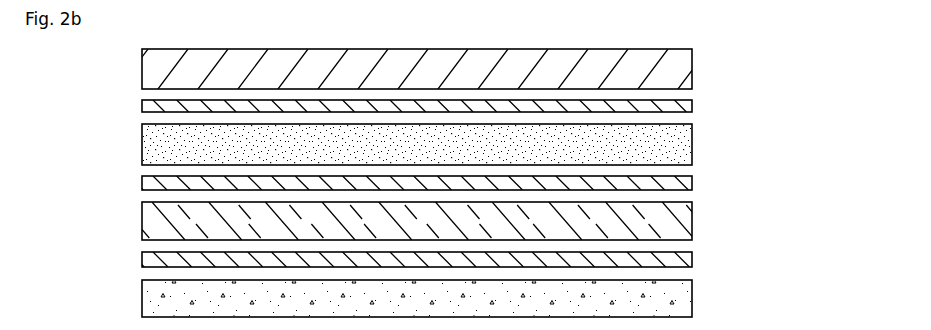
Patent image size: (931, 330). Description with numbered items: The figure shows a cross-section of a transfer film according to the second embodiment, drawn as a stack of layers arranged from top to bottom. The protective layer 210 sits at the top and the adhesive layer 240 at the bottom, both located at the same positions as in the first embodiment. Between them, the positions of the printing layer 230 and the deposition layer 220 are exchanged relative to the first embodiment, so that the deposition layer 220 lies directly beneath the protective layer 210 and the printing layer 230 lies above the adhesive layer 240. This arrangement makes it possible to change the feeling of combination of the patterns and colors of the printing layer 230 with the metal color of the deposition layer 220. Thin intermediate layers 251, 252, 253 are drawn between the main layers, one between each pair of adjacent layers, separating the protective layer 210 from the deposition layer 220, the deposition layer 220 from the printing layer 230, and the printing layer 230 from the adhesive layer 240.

The protective layer 210 is at (142, 65).
The deposition layer 220 is at (142, 142).
The printing layer 230 is at (142, 218).
The adhesive layer 240 is at (142, 294).
The first adhesive layer 251 is at (692, 104).
The second adhesive layer 252 is at (692, 182).
The third adhesive layer 253 is at (692, 259).